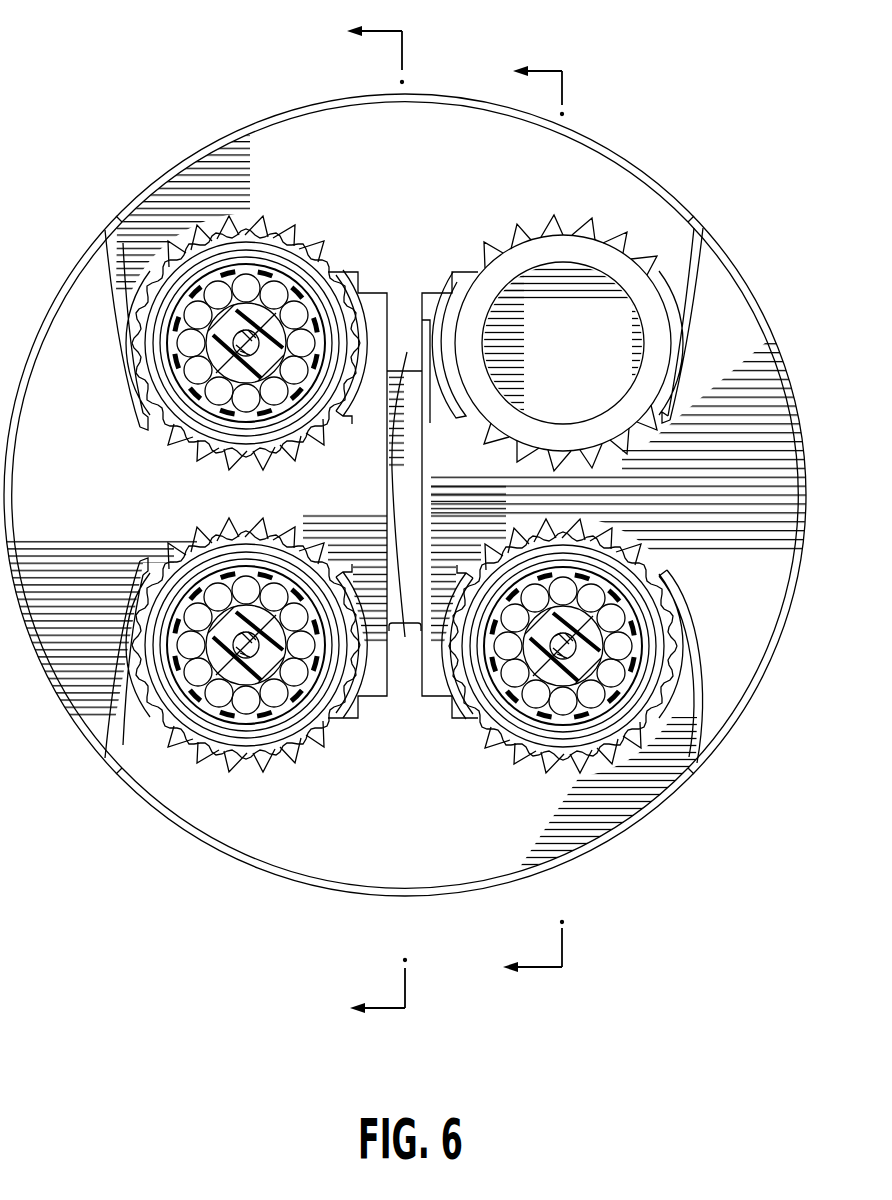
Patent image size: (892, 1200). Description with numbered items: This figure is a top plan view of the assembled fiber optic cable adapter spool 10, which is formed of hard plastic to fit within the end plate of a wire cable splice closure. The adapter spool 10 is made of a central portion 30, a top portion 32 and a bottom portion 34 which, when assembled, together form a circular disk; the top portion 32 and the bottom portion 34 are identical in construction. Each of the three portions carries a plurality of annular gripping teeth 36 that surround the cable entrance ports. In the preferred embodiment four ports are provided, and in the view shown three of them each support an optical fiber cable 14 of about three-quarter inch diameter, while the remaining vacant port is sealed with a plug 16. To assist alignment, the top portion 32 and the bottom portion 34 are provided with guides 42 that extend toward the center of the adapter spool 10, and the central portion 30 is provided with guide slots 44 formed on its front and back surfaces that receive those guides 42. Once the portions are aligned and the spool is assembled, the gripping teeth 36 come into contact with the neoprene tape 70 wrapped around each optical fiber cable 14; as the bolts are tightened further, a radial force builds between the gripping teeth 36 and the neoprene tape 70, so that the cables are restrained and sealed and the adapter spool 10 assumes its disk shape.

The adapter spool 10 is at (162, 112).
The optical fiber cable 14 is at (192, 408).
The plug 16 is at (605, 262).
The central portion 30 is at (737, 333).
The top portion 32 is at (568, 162).
The bottom portion 34 is at (577, 812).
The gripping teeth 36 is at (145, 268).
The guides 42 is at (388, 442).
The guide slots 44 is at (423, 492).
The neoprene tape 70 is at (268, 240).